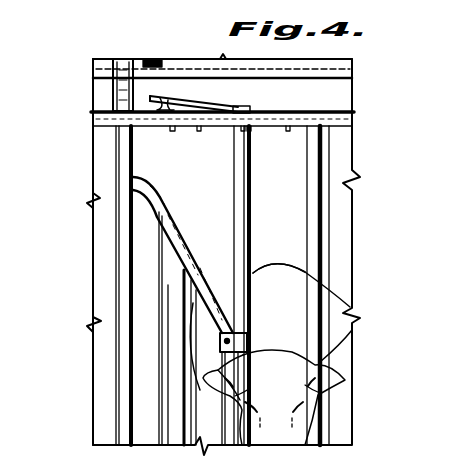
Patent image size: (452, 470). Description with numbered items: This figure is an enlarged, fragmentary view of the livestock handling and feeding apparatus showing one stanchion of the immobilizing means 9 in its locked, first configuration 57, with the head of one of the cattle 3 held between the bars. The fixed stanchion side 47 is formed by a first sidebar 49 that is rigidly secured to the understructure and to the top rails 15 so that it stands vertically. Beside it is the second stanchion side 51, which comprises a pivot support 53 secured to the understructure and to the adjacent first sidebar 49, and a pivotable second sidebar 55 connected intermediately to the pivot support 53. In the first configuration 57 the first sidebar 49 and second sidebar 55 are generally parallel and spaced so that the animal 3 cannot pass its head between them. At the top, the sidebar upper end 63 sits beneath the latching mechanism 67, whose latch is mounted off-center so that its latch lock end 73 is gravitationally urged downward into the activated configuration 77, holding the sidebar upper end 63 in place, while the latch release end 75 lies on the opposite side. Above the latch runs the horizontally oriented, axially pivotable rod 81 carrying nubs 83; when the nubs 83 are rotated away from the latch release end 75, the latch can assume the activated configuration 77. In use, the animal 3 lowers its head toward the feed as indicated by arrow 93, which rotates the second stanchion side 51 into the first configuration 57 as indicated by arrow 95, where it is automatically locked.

The cattle 3 is at (296, 367).
The immobilizing means 9 is at (356, 256).
The top rails 15 is at (93, 119).
The fixed stanchion side 47 is at (316, 139).
The first sidebar 49 is at (325, 171).
The second stanchion side 51 is at (252, 214).
The pivot support 53 is at (198, 258).
The second sidebar 55 is at (251, 257).
The first configuration 57 is at (55, 245).
The sidebar upper end 63 is at (247, 108).
The latching mechanism 67 is at (172, 129).
The latch lock end 73 is at (218, 86).
The latch release end 75 is at (161, 98).
The activated configuration 77 is at (220, 148).
The rod 81 is at (303, 90).
The nubs 83 is at (148, 60).
The arrow indicating lowering of the head 93 is at (279, 336).
The arrow indicating rotation of second stanchion side 95 is at (212, 141).